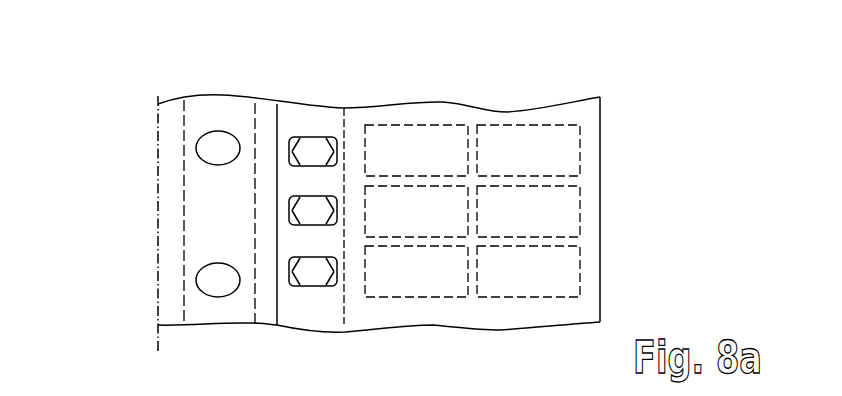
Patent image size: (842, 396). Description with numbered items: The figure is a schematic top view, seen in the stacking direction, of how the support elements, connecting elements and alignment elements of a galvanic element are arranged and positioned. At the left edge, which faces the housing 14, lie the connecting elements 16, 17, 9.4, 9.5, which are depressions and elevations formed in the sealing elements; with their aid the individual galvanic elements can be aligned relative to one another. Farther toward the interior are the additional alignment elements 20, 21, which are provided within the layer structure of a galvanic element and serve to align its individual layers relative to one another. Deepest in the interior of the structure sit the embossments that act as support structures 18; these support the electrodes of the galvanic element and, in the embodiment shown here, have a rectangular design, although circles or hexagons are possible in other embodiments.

The housing 14 is at (157, 118).
The connecting element 9.4 is at (230, 148).
The connecting element 9.5 is at (230, 148).
The connecting element 16 is at (230, 148).
The connecting element 17 is at (217, 138).
The alignment element 20 is at (313, 162).
The alignment element 21 is at (313, 143).
The support structure 18 is at (512, 125).